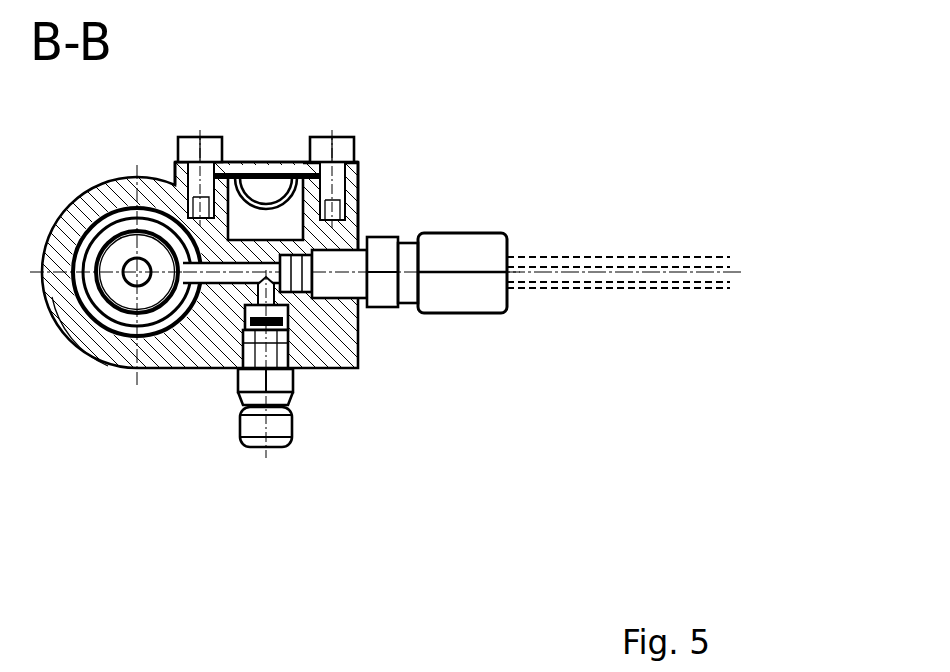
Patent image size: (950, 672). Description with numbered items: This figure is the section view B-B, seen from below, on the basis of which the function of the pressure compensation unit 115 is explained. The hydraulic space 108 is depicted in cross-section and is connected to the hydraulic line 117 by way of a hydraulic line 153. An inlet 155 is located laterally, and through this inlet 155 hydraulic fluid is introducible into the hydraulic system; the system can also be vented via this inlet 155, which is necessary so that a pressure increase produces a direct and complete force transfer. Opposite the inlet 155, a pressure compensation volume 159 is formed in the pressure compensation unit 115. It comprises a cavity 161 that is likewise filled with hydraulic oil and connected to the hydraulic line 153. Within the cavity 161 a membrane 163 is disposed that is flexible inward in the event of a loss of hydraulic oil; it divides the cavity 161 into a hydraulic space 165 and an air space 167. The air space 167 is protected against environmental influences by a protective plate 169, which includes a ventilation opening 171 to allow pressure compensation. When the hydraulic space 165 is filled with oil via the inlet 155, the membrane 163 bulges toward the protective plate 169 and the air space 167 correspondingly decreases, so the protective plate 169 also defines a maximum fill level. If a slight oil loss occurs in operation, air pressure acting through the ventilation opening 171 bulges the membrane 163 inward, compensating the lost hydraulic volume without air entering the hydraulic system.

The hydraulic space 108 is at (100, 366).
The pressure compensation unit 115 is at (358, 368).
The hydraulic line 117 is at (632, 272).
The hydraulic line 153 is at (232, 282).
The inlet 155 is at (296, 440).
The pressure compensation volume 159 is at (382, 159).
The cavity 161 is at (308, 236).
The membrane 163 is at (186, 173).
The hydraulic space 165 is at (265, 204).
The air space 167 is at (222, 161).
The protective plate 169 is at (290, 162).
The ventilation opening 171 is at (268, 163).